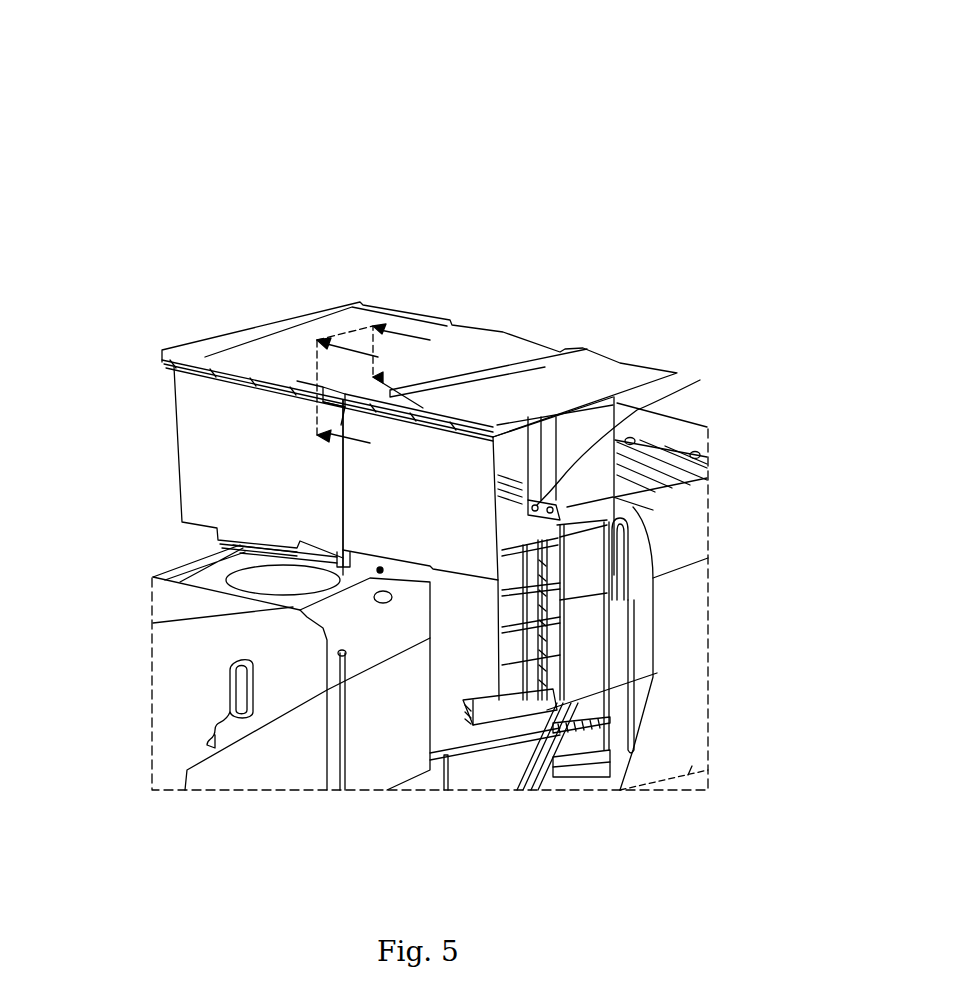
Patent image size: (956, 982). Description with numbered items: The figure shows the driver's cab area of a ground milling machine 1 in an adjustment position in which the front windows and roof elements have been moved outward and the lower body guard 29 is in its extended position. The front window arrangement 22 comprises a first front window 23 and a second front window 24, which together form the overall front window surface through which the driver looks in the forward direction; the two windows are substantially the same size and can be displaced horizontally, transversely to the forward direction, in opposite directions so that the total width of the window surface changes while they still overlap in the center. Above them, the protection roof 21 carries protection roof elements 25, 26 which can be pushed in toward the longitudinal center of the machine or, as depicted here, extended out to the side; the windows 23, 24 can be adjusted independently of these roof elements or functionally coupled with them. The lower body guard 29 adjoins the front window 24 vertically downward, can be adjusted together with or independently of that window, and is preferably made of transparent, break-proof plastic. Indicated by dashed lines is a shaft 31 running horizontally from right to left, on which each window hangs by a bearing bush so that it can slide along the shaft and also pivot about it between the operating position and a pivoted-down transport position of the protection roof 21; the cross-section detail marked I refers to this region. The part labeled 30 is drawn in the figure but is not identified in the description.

The machine 1 is at (697, 145).
The protection roof 21 is at (503, 340).
The front window arrangement 22 is at (153, 435).
The first front window 23 is at (200, 400).
The second front window 24 is at (460, 527).
The protection roof element 25 is at (371, 323).
The protection roof element 26 is at (610, 368).
The lower body guard 29 is at (473, 667).
The latching element 30 is at (617, 490).
The shaft 31 is at (450, 424).